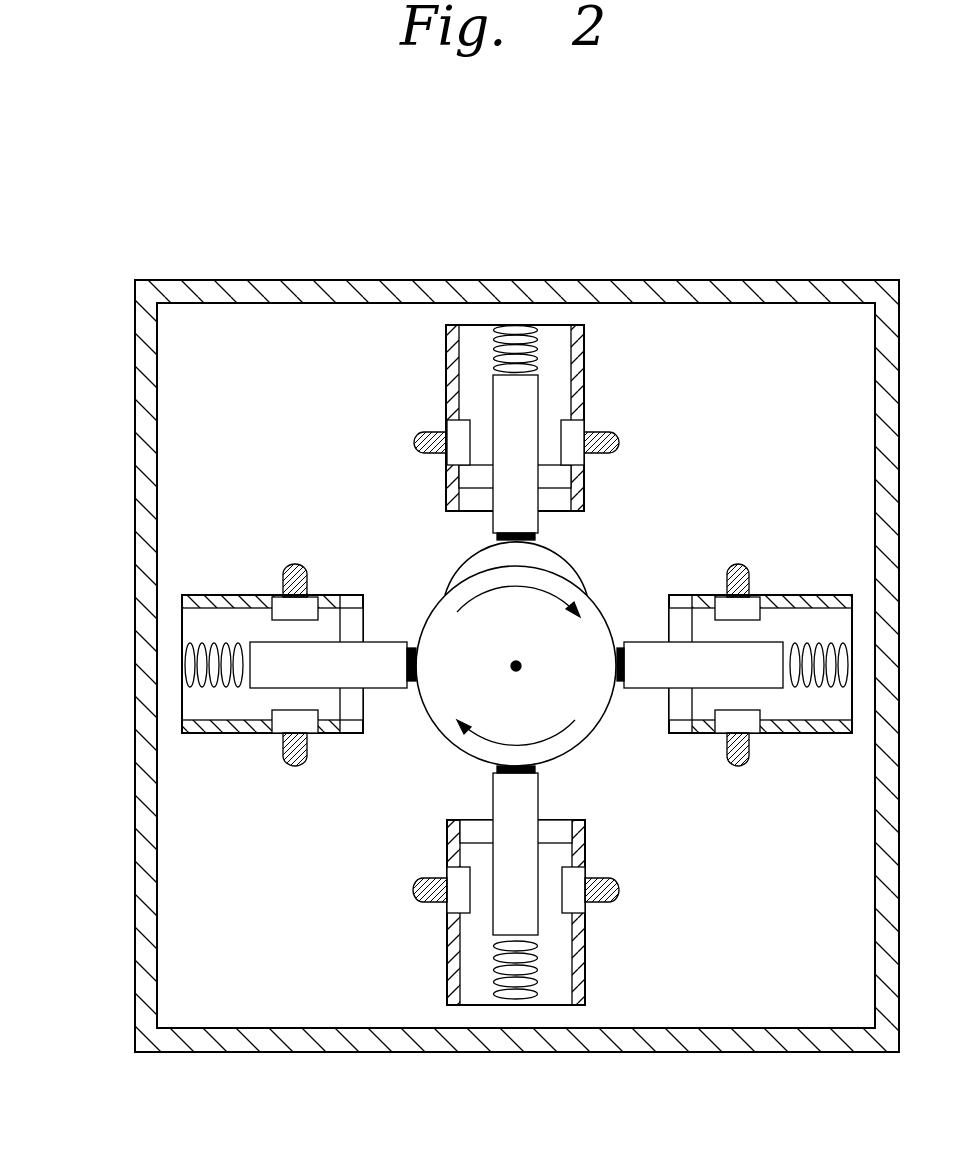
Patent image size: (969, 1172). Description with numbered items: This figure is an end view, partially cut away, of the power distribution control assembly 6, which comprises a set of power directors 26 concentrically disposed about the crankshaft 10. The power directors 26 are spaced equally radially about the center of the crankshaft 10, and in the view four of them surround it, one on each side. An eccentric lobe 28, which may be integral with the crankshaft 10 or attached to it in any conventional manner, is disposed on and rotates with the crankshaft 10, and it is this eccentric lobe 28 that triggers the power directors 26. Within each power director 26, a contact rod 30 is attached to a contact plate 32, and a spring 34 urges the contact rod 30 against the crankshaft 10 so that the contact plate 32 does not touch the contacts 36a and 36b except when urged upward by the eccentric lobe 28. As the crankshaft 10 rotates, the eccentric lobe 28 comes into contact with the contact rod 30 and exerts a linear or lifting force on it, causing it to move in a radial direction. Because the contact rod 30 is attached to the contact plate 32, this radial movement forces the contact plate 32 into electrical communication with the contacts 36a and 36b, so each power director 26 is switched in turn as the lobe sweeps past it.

The power distribution control assembly 6 is at (128, 490).
The crankshaft 10 is at (576, 705).
The power director 26 is at (440, 351).
The eccentric lobe 28 is at (478, 562).
The contact rod 30 is at (530, 524).
The contact plate 32 is at (565, 484).
The spring 34 is at (540, 343).
The contact 36a is at (577, 430).
The contact 36b is at (460, 457).